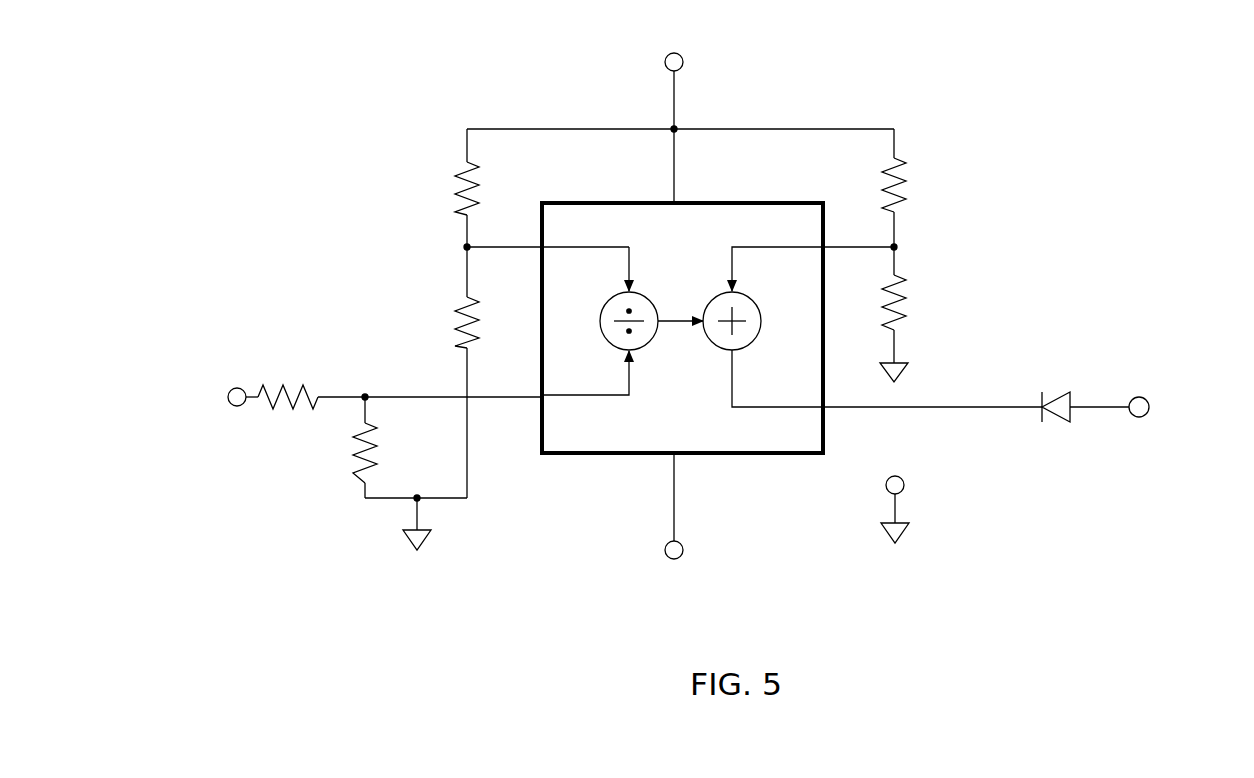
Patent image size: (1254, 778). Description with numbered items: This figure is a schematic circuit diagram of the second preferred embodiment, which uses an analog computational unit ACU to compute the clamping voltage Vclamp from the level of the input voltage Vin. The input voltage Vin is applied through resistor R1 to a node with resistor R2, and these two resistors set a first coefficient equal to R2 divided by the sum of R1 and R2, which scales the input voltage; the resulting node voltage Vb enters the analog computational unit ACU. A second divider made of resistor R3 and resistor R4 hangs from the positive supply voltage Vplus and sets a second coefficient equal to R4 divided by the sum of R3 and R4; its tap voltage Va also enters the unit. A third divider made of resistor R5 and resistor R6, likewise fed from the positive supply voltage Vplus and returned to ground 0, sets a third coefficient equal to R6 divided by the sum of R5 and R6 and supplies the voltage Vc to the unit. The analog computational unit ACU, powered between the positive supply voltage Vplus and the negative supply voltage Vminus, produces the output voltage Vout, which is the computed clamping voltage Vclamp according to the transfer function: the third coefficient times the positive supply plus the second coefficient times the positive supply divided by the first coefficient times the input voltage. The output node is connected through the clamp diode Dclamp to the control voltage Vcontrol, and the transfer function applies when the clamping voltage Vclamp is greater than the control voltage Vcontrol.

The resistor R1 is at (288, 380).
The resistor R2 is at (388, 453).
The resistor R3 is at (444, 188).
The resistor R4 is at (446, 322).
The resistor R5 is at (914, 185).
The resistor R6 is at (914, 302).
The clamp diode Dclamp is at (1071, 388).
The input voltage Vin is at (226, 379).
The control voltage Vcontrol is at (1187, 392).
The clamping voltage Vclamp is at (925, 415).
The positive supply voltage Vplus is at (693, 50).
The negative supply terminal Vminus is at (693, 558).
The divider input a Va is at (548, 252).
The divider input b Vb is at (585, 373).
The summer input c Vc is at (813, 252).
The output voltage Vout is at (887, 378).
The analog computational unit ACU is at (614, 462).
The ground 0 is at (655, 465).